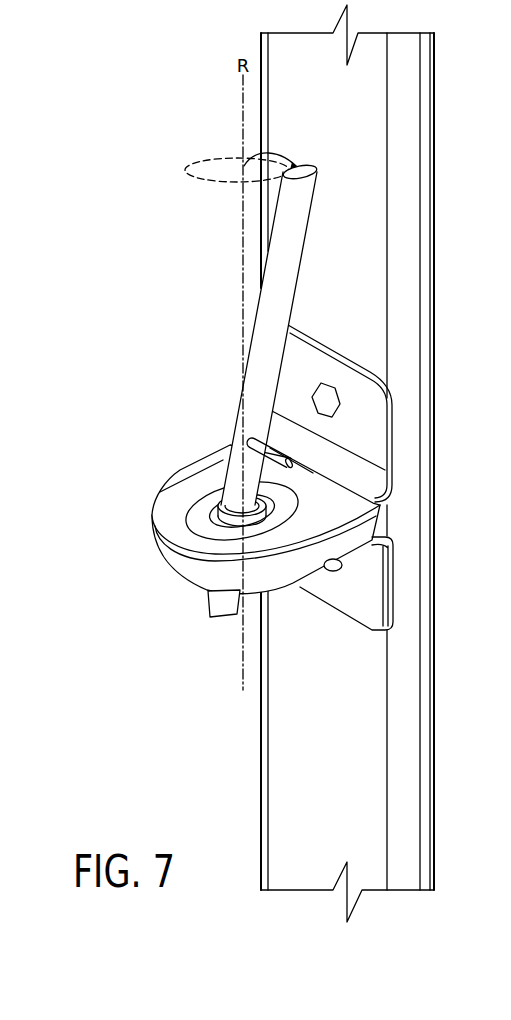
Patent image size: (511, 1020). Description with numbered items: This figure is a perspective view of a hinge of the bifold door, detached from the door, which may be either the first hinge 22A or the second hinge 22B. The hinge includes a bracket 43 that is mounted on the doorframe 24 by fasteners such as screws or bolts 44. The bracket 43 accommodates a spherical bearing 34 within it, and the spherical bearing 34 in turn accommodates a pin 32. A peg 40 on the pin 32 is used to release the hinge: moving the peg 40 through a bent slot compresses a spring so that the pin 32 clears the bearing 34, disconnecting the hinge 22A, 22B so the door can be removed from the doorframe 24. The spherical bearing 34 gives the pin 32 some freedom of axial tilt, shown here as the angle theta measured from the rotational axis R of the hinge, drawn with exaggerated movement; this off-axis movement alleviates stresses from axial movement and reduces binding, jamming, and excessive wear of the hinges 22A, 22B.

The first hinge 22A is at (252, 416).
The second hinge 22B is at (252, 416).
The doorframe 24 is at (434, 133).
The pin 32 is at (308, 236).
The spherical bearing 34 is at (221, 506).
The peg 40 is at (292, 462).
The bracket 43 is at (393, 442).
The screws or bolts 44 is at (339, 403).